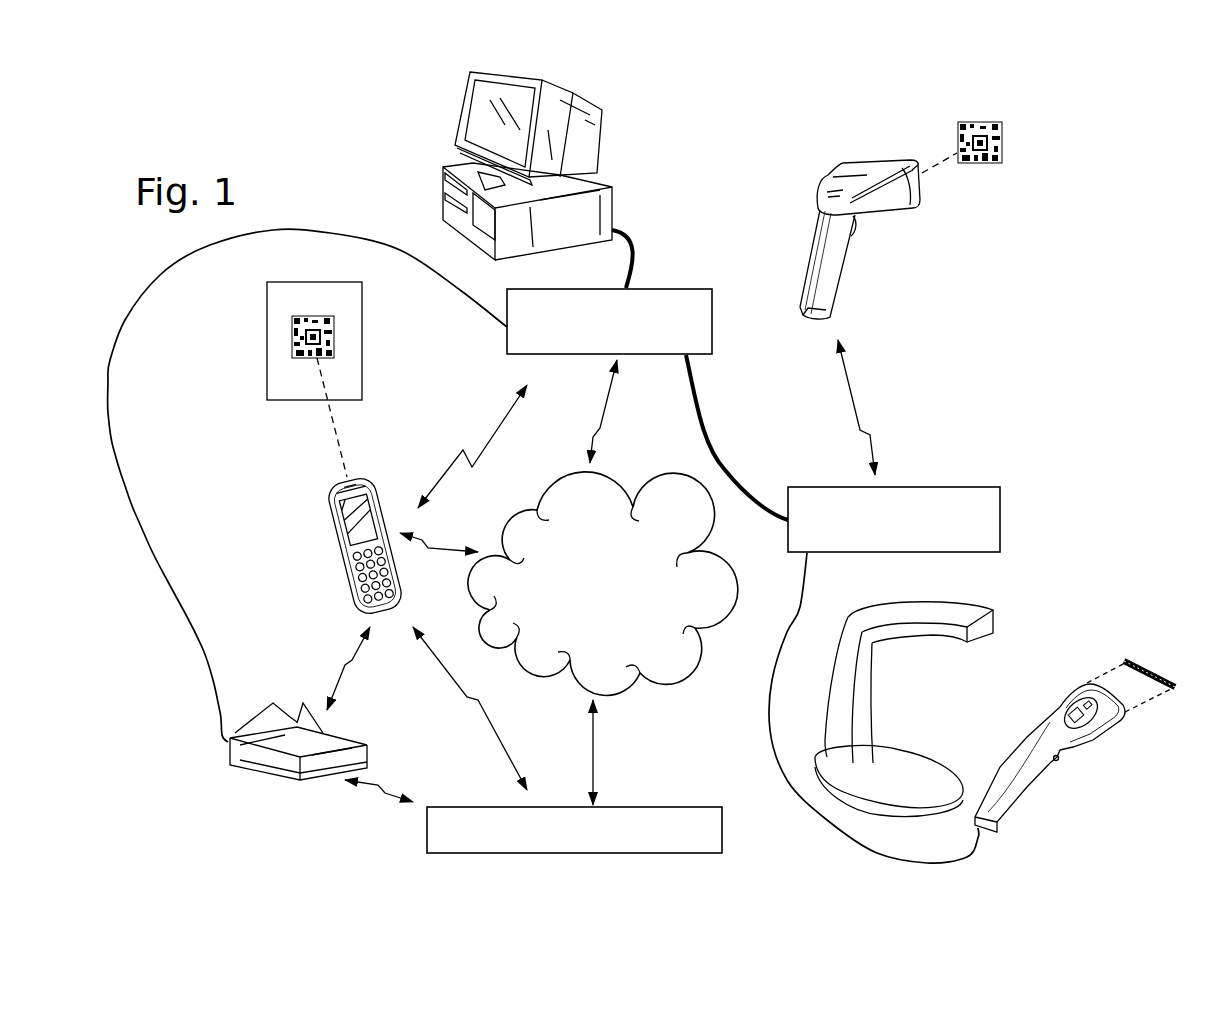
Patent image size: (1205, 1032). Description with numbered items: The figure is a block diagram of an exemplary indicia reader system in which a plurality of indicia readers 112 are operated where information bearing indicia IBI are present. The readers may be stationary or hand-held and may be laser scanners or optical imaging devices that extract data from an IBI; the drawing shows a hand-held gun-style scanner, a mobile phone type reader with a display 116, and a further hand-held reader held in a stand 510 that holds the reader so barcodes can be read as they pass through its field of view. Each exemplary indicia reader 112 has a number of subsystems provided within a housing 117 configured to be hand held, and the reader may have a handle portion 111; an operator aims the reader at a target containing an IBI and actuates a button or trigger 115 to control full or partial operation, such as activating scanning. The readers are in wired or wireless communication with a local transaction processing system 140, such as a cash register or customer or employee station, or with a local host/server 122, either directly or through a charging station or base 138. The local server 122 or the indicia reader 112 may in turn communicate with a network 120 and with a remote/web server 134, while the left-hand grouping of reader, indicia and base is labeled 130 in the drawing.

The local transaction processing system 140 is at (452, 165).
The local host/server 122 is at (672, 287).
The remote/web server 134 is at (667, 805).
The network 120 is at (702, 655).
The information bearing indicia IBI is at (363, 335).
The display 116 is at (353, 517).
The housing 117 is at (828, 182).
The handle portion 111 is at (830, 292).
The trigger 115 is at (857, 222).
The indicia reader 112 is at (800, 247).
The stand 510 is at (997, 588).
The charging station or base 138 is at (230, 740).
The local system 130 is at (233, 793).